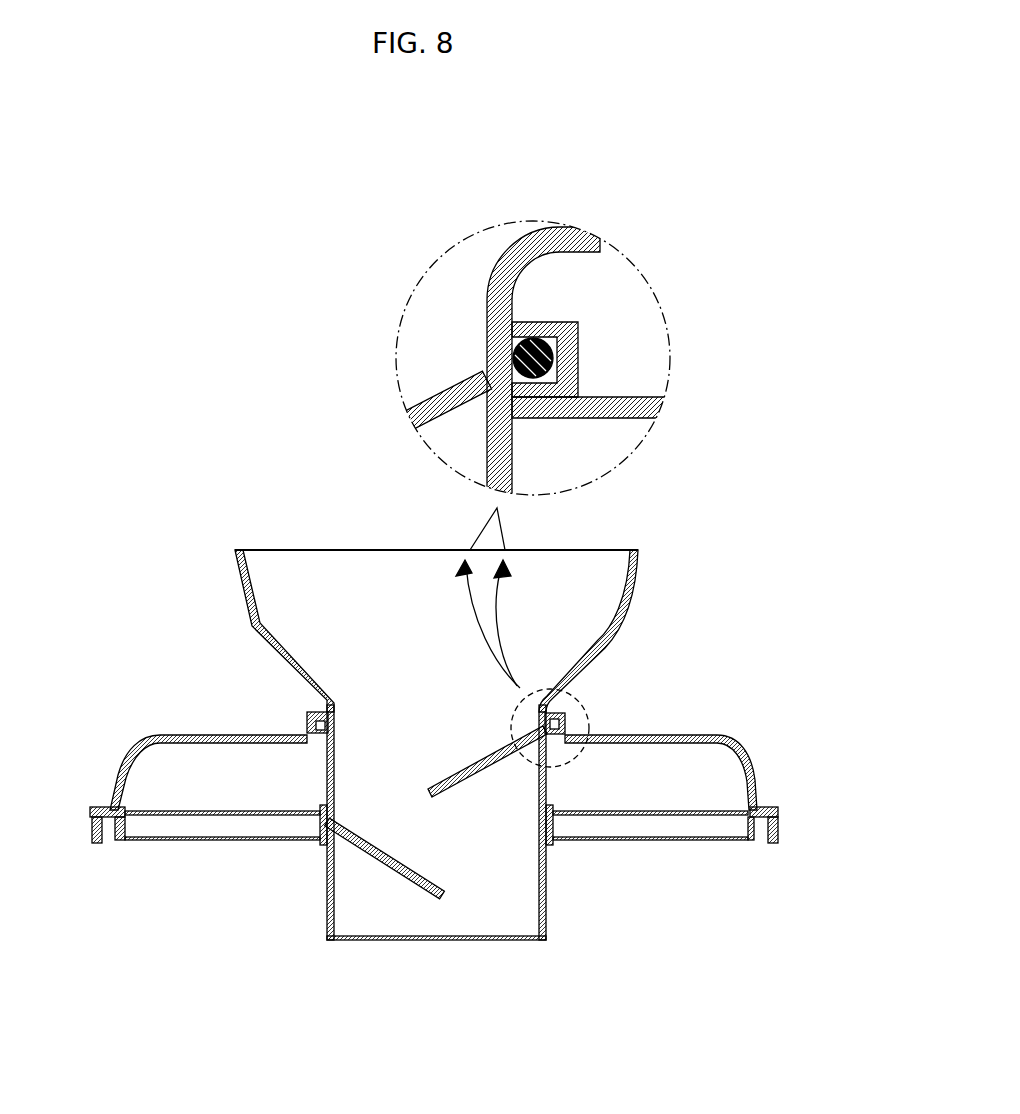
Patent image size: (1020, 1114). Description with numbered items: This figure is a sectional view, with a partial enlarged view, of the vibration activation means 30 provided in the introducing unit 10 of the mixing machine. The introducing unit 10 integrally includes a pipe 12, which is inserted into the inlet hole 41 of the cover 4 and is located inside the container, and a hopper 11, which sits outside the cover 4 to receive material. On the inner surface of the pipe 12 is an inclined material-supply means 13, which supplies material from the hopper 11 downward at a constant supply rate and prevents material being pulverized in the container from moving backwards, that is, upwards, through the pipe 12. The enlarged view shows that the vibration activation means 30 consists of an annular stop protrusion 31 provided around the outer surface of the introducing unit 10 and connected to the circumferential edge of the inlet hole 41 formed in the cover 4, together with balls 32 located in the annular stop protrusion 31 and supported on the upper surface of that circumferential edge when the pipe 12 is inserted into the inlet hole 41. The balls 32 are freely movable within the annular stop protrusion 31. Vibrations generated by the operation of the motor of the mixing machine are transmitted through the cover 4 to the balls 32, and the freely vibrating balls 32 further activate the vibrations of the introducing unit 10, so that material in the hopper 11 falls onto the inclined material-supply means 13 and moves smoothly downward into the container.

The introducing unit 10 is at (233, 550).
The hopper 11 is at (617, 641).
The pipe 12 is at (548, 895).
The inclined material-supply means 13 is at (420, 747).
The vibration activation means 30 is at (652, 220).
The annular stop protrusion 31 is at (580, 347).
The balls 32 is at (527, 325).
The cover 4 is at (133, 738).
The inlet hole 41 is at (515, 420).